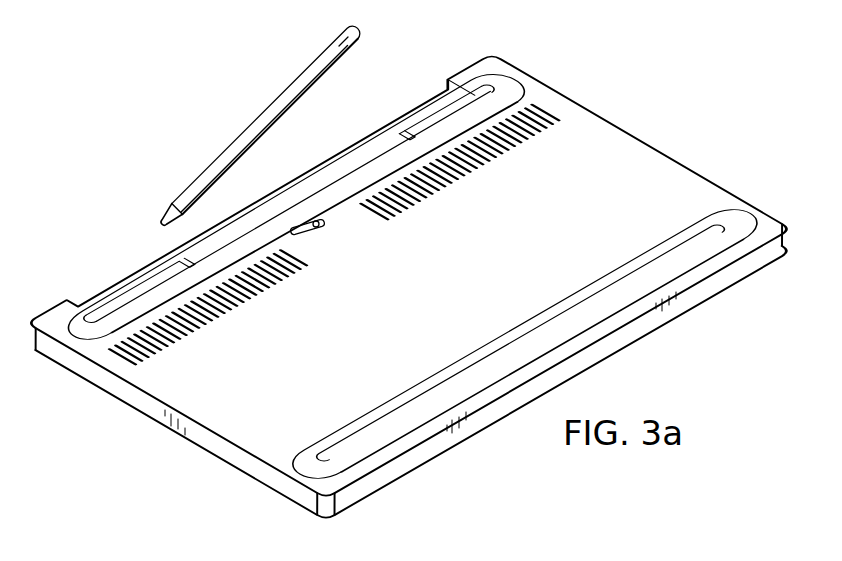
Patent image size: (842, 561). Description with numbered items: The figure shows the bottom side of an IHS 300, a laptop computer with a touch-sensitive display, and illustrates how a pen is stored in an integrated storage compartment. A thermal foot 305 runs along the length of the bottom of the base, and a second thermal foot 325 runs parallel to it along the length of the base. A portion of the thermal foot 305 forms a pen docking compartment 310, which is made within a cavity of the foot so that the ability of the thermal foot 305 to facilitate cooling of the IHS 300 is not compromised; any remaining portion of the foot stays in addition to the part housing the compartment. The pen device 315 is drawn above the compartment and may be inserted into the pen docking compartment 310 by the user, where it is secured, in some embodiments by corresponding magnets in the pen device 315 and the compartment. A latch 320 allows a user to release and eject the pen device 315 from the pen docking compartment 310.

The IHS 300 is at (690, 91).
The thermal foot 305 is at (135, 275).
The pen docking compartment 310 is at (351, 172).
The pen device 315 is at (265, 117).
The latch 320 is at (326, 226).
The second thermal foot 325 is at (518, 333).